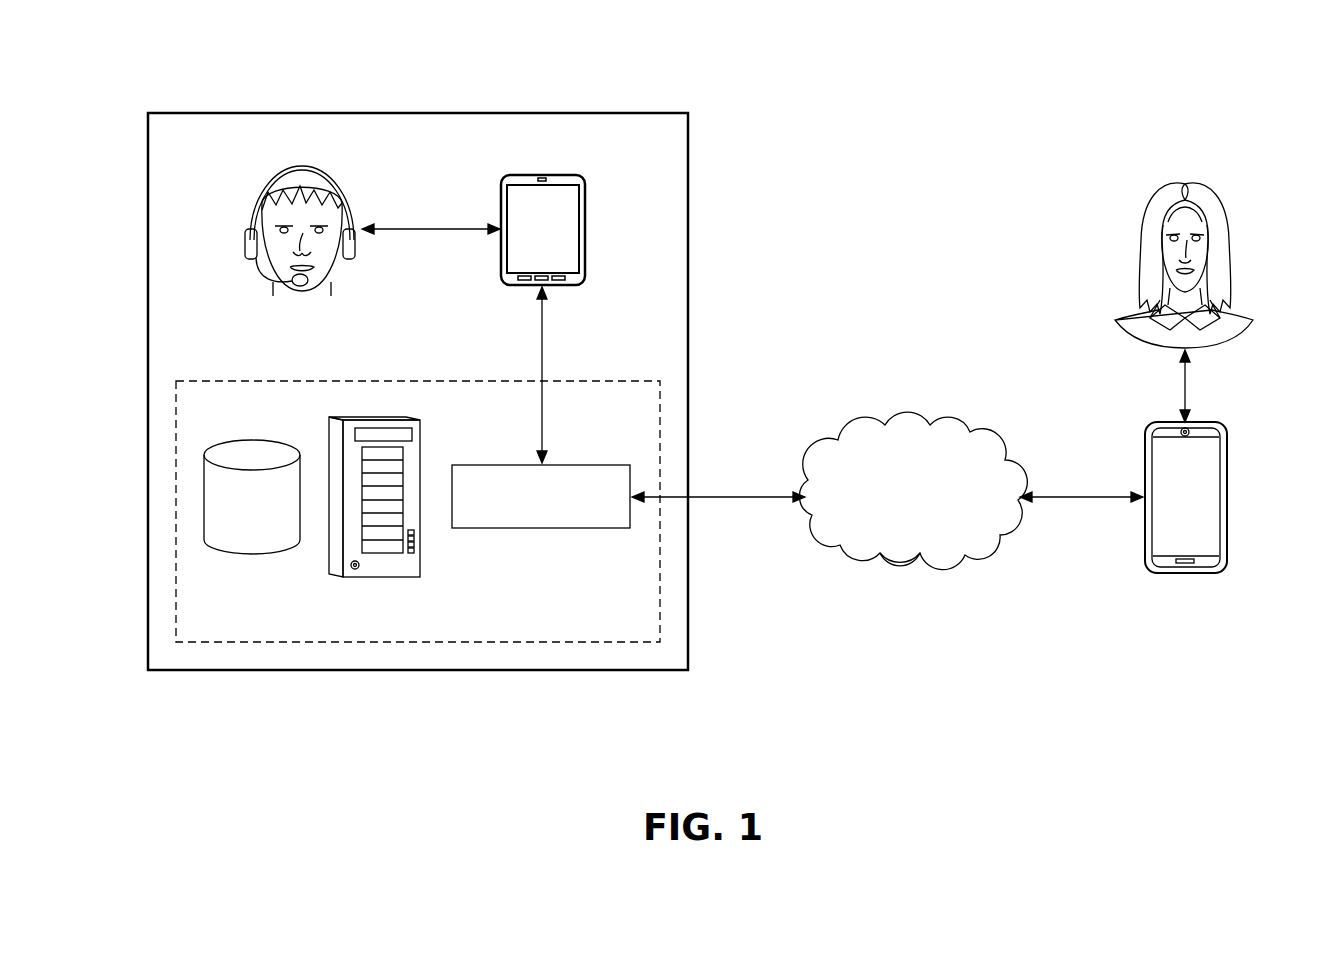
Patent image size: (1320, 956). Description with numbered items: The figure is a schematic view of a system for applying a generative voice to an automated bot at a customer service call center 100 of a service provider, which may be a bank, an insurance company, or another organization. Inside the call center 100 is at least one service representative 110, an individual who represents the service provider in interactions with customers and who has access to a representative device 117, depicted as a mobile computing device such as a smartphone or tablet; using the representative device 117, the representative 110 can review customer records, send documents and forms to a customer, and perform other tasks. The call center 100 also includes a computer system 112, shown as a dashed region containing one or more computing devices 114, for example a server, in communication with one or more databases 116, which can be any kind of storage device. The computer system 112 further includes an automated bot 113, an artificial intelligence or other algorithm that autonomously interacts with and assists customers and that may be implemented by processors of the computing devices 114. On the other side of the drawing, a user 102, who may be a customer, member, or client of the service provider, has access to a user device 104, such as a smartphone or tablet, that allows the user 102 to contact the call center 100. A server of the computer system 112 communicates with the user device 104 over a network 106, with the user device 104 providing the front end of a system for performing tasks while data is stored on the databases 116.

The customer service call center 100 is at (565, 113).
The user 102 is at (1163, 190).
The user device 104 is at (1185, 575).
The network 106 is at (902, 577).
The service representative 110 is at (300, 167).
The computer system 112 is at (662, 600).
The automated bot 113 is at (590, 530).
The computing device 114 is at (421, 548).
The database 116 is at (241, 552).
The representative device 117 is at (588, 220).